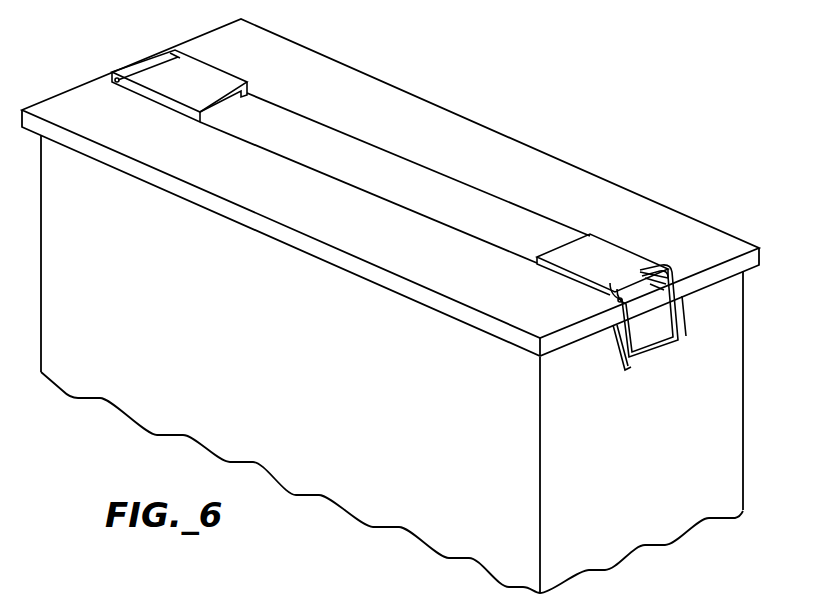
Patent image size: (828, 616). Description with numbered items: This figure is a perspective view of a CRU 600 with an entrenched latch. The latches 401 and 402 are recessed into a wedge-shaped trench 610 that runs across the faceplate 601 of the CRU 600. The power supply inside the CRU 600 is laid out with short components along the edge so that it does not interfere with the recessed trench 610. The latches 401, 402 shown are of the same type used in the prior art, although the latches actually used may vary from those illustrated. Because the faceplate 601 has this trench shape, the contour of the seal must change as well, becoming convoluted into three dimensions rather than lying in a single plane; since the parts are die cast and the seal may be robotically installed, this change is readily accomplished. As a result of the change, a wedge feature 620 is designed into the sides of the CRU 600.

The CRU 600 is at (299, 351).
The faceplate 601 is at (468, 148).
The trench 610 is at (368, 163).
The latch 401 is at (166, 79).
The latch 402 is at (610, 243).
The wedge feature 620 is at (668, 355).